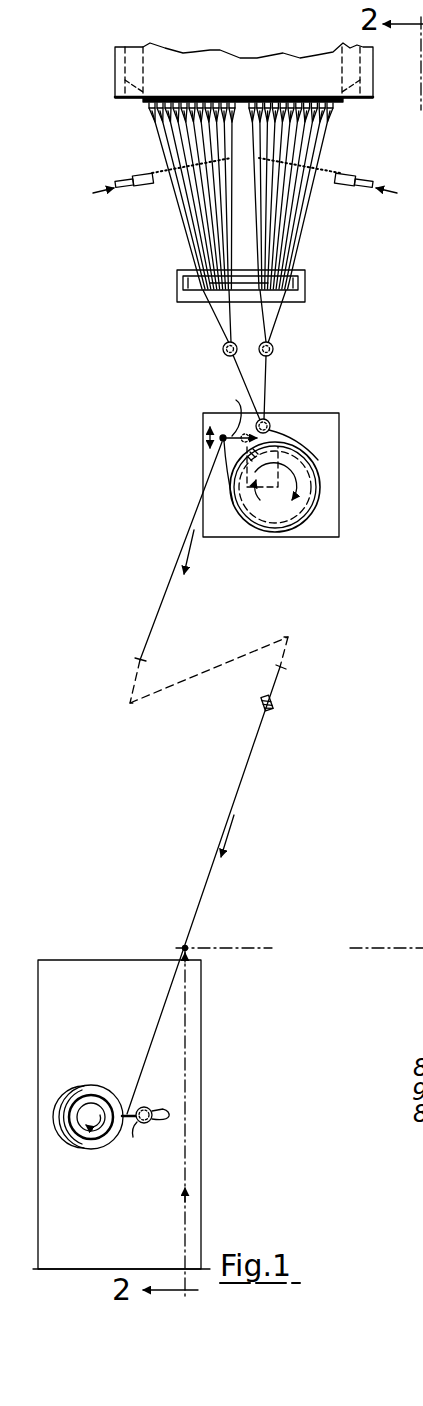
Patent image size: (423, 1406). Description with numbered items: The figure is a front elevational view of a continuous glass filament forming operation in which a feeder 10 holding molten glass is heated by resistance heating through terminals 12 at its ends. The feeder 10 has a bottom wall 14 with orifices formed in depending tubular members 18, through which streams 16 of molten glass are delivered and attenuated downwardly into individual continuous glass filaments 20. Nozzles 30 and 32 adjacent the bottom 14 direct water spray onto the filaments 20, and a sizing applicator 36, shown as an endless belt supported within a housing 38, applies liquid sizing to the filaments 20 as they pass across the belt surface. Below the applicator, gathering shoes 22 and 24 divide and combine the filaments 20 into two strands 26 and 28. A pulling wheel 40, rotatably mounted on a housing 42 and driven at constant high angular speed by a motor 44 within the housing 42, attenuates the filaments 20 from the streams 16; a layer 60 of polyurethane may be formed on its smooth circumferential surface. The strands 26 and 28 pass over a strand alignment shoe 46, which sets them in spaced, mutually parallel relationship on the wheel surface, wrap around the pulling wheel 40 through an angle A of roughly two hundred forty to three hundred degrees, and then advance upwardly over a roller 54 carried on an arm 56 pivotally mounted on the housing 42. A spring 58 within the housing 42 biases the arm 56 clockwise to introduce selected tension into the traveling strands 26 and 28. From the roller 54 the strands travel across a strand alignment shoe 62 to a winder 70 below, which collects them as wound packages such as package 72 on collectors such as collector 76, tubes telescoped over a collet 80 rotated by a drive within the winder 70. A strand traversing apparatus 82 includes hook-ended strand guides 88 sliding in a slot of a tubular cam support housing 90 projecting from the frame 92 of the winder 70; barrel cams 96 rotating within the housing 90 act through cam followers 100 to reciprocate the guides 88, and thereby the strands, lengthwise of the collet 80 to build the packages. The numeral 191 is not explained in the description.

The feeder 10 is at (366, 40).
The terminals 12 is at (125, 83).
The bottom wall 14 is at (153, 102).
The streams 16 is at (172, 120).
The tubular members 18 is at (150, 108).
The continuous glass filaments 20 is at (220, 208).
The gathering shoe 22 is at (224, 347).
The gathering shoe 24 is at (271, 345).
The strand 26 is at (237, 368).
The strand 28 is at (265, 361).
The nozzle 30 is at (133, 176).
The nozzle 32 is at (345, 176).
The sizing applicator 36 is at (196, 268).
The housing 38 is at (177, 278).
The pulling wheel 40 is at (322, 506).
The housing 42 is at (339, 413).
The motor 44 is at (260, 515).
The strand alignment shoe 46 is at (268, 420).
The roller 54 is at (223, 435).
The arm 56 is at (236, 400).
The spring 58 is at (252, 463).
The layer 60 is at (306, 459).
The strand alignment shoe 62 is at (263, 703).
The winder 70 is at (143, 960).
The wound package 72 is at (115, 1090).
The collector 76 is at (83, 1085).
The collet 80 is at (68, 1128).
The strand traversing apparatus 82 is at (150, 1108).
The strand guides 88 is at (127, 1122).
The cam support housing 90 is at (133, 1137).
The frame 92 is at (173, 1177).
The barrel cams 96 is at (152, 1122).
The cam followers 100 is at (145, 1101).
The lever 191 is at (169, 1116).